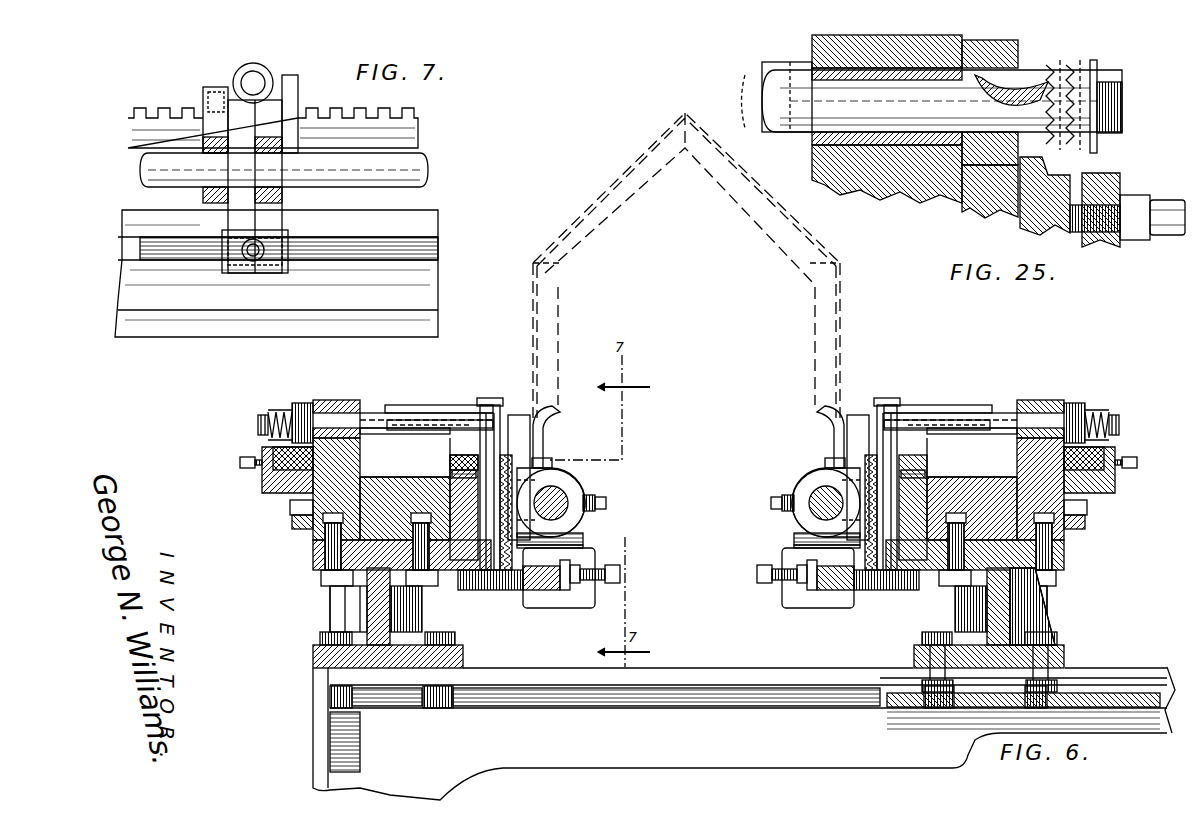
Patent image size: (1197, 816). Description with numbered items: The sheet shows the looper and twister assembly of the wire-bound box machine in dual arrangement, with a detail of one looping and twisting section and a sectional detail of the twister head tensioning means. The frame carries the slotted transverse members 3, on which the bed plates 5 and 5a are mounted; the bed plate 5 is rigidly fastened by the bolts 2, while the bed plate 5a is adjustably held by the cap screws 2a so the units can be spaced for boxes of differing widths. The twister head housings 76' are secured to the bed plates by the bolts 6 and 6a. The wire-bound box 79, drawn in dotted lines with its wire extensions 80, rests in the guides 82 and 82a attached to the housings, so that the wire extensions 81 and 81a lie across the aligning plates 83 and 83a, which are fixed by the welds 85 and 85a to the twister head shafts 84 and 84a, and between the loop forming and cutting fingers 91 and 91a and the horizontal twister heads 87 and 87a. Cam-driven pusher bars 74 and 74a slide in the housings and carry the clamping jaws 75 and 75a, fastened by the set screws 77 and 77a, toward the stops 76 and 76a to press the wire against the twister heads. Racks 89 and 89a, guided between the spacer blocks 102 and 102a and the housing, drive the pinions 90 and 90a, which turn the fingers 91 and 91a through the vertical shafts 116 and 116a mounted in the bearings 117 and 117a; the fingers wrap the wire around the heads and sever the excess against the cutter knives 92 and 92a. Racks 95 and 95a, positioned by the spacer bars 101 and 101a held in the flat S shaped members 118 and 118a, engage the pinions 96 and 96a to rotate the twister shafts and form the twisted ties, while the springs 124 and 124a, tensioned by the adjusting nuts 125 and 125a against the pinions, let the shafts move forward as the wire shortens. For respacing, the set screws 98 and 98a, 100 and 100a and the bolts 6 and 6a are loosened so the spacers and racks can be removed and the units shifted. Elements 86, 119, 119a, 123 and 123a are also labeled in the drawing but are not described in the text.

In FIG. 6, the bolts 2 is at (456, 638).
In FIG. 6, the cap screws 2a is at (1060, 638).
In FIG. 6, the slotted transverse members 3 is at (1095, 685).
In FIG. 7, the bed plate 5 is at (228, 325).
In FIG. 6, the bed plate 5 is at (367, 615).
In FIG. 6, the bed plate 5a is at (1040, 607).
In FIG. 6, the bolts 6 is at (428, 585).
In FIG. 6, the bolts 6a is at (1060, 578).
In FIG. 7, the pusher bar 74 is at (145, 160).
In FIG. 6, the pusher bar 74 is at (570, 495).
In FIG. 6, the pusher bar 74a is at (805, 505).
In FIG. 7, the clamping jaw 75 is at (203, 195).
In FIG. 6, the clamping jaw 75 is at (550, 440).
In FIG. 6, the clamping jaw 75a is at (835, 440).
In FIG. 7, the stop 76 is at (294, 116).
In FIG. 6, the stop 76 is at (579, 531).
In FIG. 6, the stop 76a is at (795, 540).
In FIG. 7, the twister head housing 76' is at (295, 198).
In FIG. 25, the twister head housing 76' is at (887, 135).
In FIG. 6, the twister head housing 76' is at (681, 504).
In FIG. 6, the set screw 77 is at (607, 503).
In FIG. 6, the set screw 77a is at (770, 503).
In FIG. 6, the wire-bound box 79 is at (735, 172).
In FIG. 6, the wire extensions 80 is at (840, 318).
In FIG. 6, the wire extension 81 is at (415, 420).
In FIG. 6, the wire extension 81a is at (935, 420).
In FIG. 6, the guide 82 is at (555, 410).
In FIG. 6, the guide 82a is at (820, 410).
In FIG. 7, the aligning plate 83 is at (235, 87).
In FIG. 6, the aligning plate 83 is at (455, 430).
In FIG. 6, the aligning plate 83a is at (930, 430).
In FIG. 7, the twister head shaft 84 is at (258, 72).
In FIG. 6, the twister head shaft 84 is at (372, 413).
In FIG. 25, the twister head shaft 84a is at (790, 70).
In FIG. 6, the twister head shaft 84a is at (990, 413).
In FIG. 6, the weld 85 is at (398, 434).
In FIG. 6, the weld 85a is at (1000, 434).
In FIG. 7, the block 86 is at (300, 77).
In FIG. 6, the block 86 is at (470, 443).
In FIG. 6, the horizontal twister head 87 is at (470, 405).
In FIG. 6, the horizontal twister head 87a is at (905, 405).
In FIG. 7, the rack 89 is at (375, 250).
In FIG. 6, the rack 89 is at (545, 588).
In FIG. 6, the rack 89a is at (830, 588).
In FIG. 6, the pinion 90 is at (495, 590).
In FIG. 6, the pinion 90a is at (880, 590).
In FIG. 7, the loop forming and cutting finger 91 is at (218, 90).
In FIG. 6, the loop forming and cutting finger 91 is at (495, 418).
In FIG. 6, the loop forming and cutting finger 91a is at (882, 440).
In FIG. 6, the cutter knife 92 is at (520, 415).
In FIG. 6, the cutter knife 92a is at (850, 415).
In FIG. 7, the rack 95 is at (418, 132).
In FIG. 6, the rack 95 is at (292, 508).
In FIG. 25, the rack 95a is at (990, 205).
In FIG. 6, the rack 95a is at (1065, 508).
In FIG. 6, the pinion 96 is at (302, 403).
In FIG. 25, the pinion 96a is at (975, 45).
In FIG. 6, the pinion 96a is at (1075, 403).
In FIG. 6, the set screw 98 is at (240, 462).
In FIG. 25, the set screw 98a is at (1175, 228).
In FIG. 6, the set screw 98a is at (1138, 465).
In FIG. 7, the set screw 100 is at (245, 255).
In FIG. 6, the set screw 100 is at (622, 580).
In FIG. 6, the set screw 100a is at (760, 575).
In FIG. 6, the spacer bar 101 is at (275, 490).
In FIG. 25, the spacer bar 101a is at (1050, 225).
In FIG. 6, the spacer bar 101a is at (1108, 490).
In FIG. 7, the spacer block 102 is at (302, 265).
In FIG. 6, the spacer block 102 is at (570, 595).
In FIG. 6, the spacer block 102a is at (808, 595).
In FIG. 6, the vertical shaft 116 is at (452, 472).
In FIG. 6, the vertical shaft 116a is at (925, 475).
In FIG. 6, the bearing 117 is at (583, 546).
In FIG. 6, the bearing 117a is at (840, 478).
In FIG. 6, the flat S shaped member 118 is at (265, 482).
In FIG. 25, the flat S shaped member 118a is at (1110, 180).
In FIG. 6, the flat S shaped member 118a is at (1110, 485).
In FIG. 6, the block 119 is at (295, 522).
In FIG. 6, the block 119a is at (1085, 520).
In FIG. 6, the bearing 123 is at (342, 400).
In FIG. 25, the bearing 123a is at (875, 80).
In FIG. 6, the bearing 123a is at (1040, 400).
In FIG. 6, the spring 124 is at (282, 410).
In FIG. 25, the spring 124a is at (1058, 68).
In FIG. 6, the spring 124a is at (1100, 410).
In FIG. 6, the adjusting nut 125 is at (260, 420).
In FIG. 25, the adjusting nut 125a is at (1122, 80).
In FIG. 6, the adjusting nut 125a is at (1118, 420).